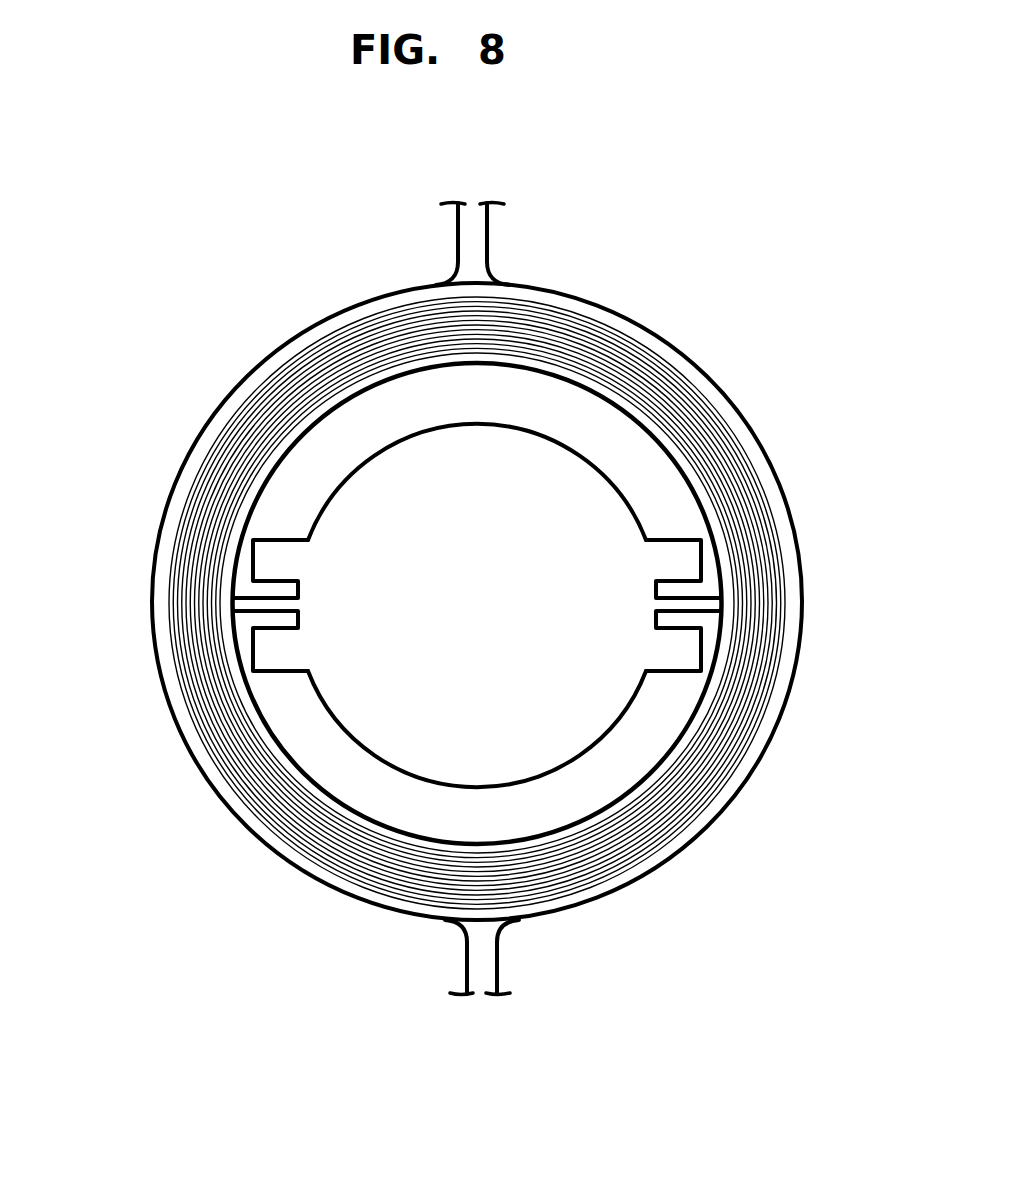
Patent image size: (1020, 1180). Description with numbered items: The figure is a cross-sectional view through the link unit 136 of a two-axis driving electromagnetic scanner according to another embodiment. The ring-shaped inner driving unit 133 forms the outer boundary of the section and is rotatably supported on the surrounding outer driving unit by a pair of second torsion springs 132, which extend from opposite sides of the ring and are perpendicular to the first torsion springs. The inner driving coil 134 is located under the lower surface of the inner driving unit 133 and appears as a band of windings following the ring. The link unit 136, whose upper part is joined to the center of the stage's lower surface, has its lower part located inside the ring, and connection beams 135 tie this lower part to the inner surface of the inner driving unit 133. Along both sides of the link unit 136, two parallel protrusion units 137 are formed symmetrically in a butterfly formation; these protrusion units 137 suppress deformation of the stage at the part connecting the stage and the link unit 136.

The second torsion springs 132 is at (472, 241).
The inner driving unit 133 is at (730, 797).
The inner driving coil 134 is at (730, 750).
The connection beams 135 is at (708, 592).
The link unit 136 is at (596, 505).
The protrusion units 137 is at (258, 558).